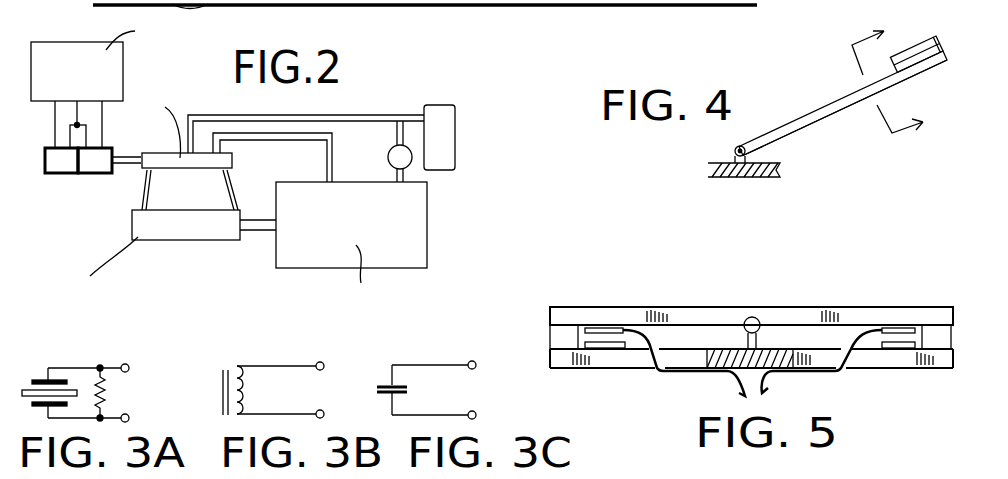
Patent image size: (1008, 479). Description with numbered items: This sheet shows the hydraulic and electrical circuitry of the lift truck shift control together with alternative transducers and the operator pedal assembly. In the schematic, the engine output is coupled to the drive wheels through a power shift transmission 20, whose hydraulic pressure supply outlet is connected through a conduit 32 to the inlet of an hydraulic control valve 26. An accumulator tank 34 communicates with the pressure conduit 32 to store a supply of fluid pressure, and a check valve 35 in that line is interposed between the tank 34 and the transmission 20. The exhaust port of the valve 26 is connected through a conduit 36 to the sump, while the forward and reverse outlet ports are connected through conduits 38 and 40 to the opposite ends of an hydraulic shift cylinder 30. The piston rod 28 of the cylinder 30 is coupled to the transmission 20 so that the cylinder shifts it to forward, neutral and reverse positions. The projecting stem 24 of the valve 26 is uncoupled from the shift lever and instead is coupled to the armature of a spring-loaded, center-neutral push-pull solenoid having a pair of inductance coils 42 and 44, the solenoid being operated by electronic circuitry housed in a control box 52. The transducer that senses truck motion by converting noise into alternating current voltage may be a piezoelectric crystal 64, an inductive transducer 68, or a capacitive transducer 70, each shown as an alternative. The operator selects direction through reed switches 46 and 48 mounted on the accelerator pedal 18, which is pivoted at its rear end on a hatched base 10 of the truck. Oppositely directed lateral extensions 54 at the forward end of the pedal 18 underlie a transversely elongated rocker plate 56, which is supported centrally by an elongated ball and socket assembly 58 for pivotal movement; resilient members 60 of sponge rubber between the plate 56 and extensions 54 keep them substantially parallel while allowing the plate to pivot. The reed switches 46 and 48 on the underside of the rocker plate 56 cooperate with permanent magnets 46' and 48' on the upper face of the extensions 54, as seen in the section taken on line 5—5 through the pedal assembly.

In FIG. 2, the control box 52 is at (112, 68).
In FIG. 2, the inductance coil 44 is at (62, 168).
In FIG. 2, the inductance coil 42 is at (95, 166).
In FIG. 2, the projecting stem 24 is at (125, 157).
In FIG. 2, the hydraulic control valve 26 is at (174, 162).
In FIG. 2, the conduit 38 is at (150, 188).
In FIG. 2, the conduit 40 is at (233, 198).
In FIG. 2, the hydraulic shift cylinder 30 is at (170, 233).
In FIG. 2, the piston rod 28 is at (263, 233).
In FIG. 2, the power shift transmission 20 is at (420, 226).
In FIG. 2, the accumulator tank 34 is at (443, 139).
In FIG. 2, the check valve 35 is at (388, 158).
In FIG. 2, the conduit 32 is at (340, 122).
In FIG. 2, the conduit 36 is at (327, 158).
In FIG. 4, the accelerator pedal 18 is at (822, 112).
In FIG. 5, the accelerator pedal 18 is at (752, 366).
In FIG. 4, the base 10 is at (748, 179).
In FIG. 4, the lateral extensions 54 is at (930, 69).
In FIG. 5, the lateral extensions 54 is at (868, 360).
In FIG. 4, the rocker plate 56 is at (912, 47).
In FIG. 5, the rocker plate 56 is at (807, 313).
In FIG. 4, the resilient members 60 is at (943, 47).
In FIG. 5, the resilient members 60 is at (558, 334).
In FIG. 4, the section line 5 is at (887, 83).
In FIG. 5, the reed switch 48 is at (604, 305).
In FIG. 5, the permanent magnet 48' is at (603, 370).
In FIG. 5, the reed switch 46 is at (896, 305).
In FIG. 5, the permanent magnet 46' is at (905, 372).
In FIG. 5, the ball and socket assembly 58 is at (752, 317).
In FIG. 3A, the piezoelectric crystal 64 is at (24, 383).
In FIG. 3B, the inductive transducer 68 is at (248, 398).
In FIG. 3C, the capacitive transducer 70 is at (387, 384).